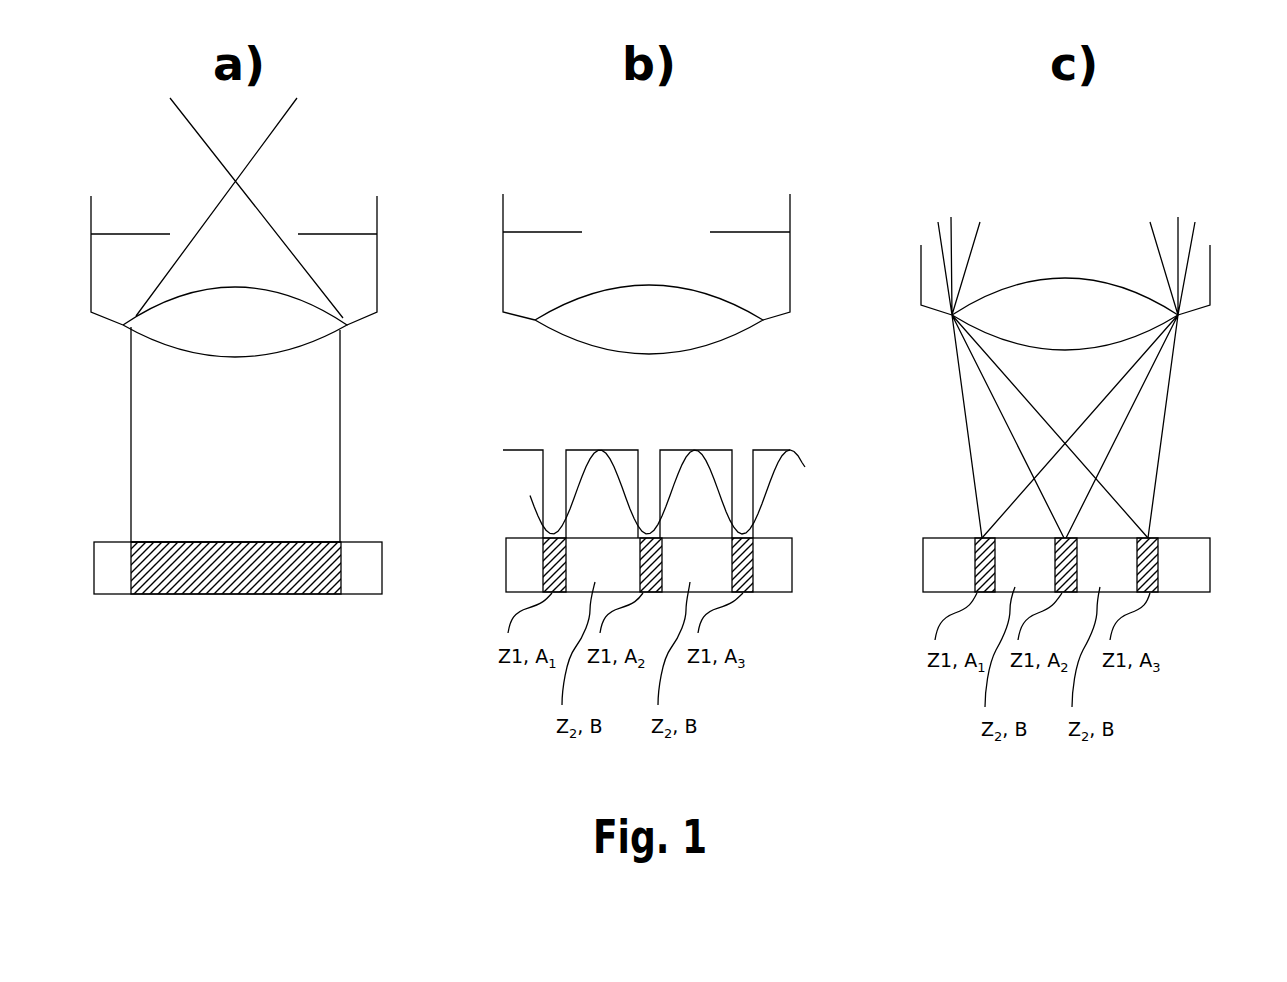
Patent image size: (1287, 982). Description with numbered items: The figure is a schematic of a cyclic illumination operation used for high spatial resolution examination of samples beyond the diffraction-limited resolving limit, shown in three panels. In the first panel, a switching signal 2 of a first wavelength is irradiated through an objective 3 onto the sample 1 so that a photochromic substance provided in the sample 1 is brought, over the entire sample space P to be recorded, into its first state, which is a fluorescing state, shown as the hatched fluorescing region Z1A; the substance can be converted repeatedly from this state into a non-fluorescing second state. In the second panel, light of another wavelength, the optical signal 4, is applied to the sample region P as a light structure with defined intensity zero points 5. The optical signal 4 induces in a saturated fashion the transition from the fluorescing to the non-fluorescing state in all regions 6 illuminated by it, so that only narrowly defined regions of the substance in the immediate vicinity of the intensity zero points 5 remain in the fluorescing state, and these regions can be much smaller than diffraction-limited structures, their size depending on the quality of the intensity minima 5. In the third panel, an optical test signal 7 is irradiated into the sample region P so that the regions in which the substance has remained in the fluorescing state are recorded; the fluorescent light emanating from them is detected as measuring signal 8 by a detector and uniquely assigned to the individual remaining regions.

The sample 1 is at (216, 602).
The switching signal 2 is at (132, 439).
The objective 3 is at (152, 323).
The optical signal 4 is at (792, 450).
The intensity zero point 5 is at (740, 520).
The illuminated region 6 is at (600, 450).
The optical test signal 7 is at (1160, 468).
The measuring signal 8 is at (1088, 377).
The sample space P is at (168, 593).
The first state Z1, fluorescing state A Z1A is at (275, 582).